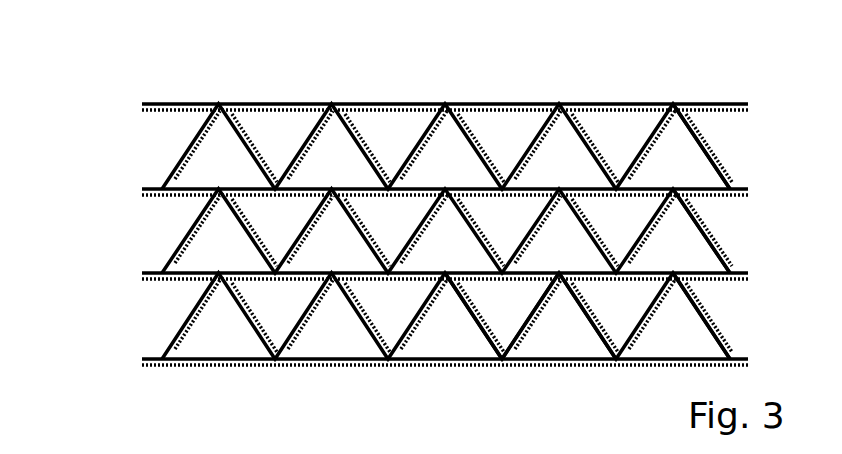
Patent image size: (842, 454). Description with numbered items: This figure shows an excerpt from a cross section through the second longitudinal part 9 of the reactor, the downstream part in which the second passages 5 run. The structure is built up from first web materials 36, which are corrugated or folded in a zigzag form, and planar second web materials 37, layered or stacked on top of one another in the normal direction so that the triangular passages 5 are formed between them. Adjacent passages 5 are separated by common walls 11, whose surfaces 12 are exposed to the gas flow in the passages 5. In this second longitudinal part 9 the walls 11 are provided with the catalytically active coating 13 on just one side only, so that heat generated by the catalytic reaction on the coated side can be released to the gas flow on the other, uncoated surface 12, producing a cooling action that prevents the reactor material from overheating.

The second longitudinal part 9 is at (418, 220).
The planar second web material 37 is at (108, 104).
The first web material 36 is at (428, 234).
The passages 5 is at (445, 157).
The common walls 11 is at (540, 334).
The surfaces 12 is at (716, 134).
The catalytically active coating 13 is at (700, 241).